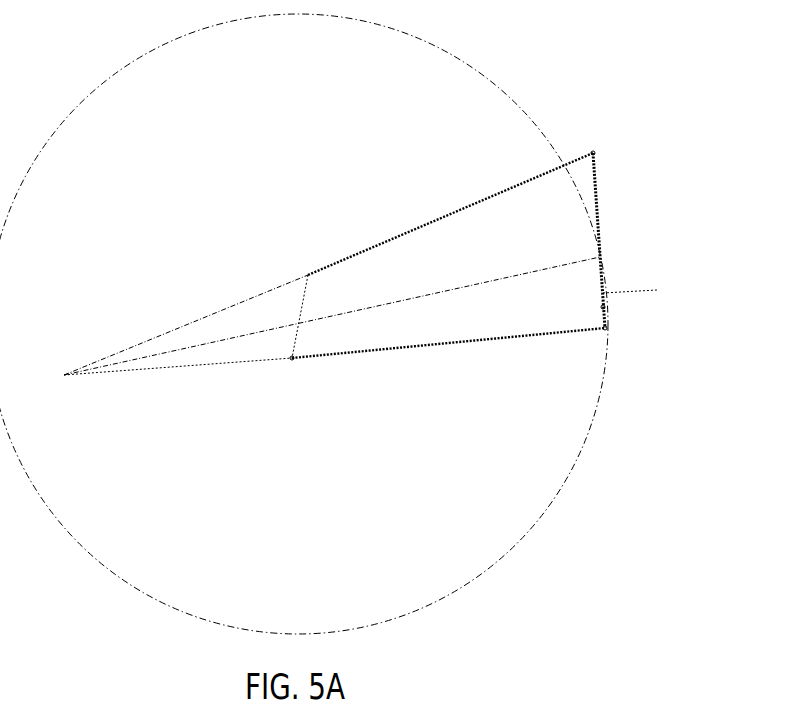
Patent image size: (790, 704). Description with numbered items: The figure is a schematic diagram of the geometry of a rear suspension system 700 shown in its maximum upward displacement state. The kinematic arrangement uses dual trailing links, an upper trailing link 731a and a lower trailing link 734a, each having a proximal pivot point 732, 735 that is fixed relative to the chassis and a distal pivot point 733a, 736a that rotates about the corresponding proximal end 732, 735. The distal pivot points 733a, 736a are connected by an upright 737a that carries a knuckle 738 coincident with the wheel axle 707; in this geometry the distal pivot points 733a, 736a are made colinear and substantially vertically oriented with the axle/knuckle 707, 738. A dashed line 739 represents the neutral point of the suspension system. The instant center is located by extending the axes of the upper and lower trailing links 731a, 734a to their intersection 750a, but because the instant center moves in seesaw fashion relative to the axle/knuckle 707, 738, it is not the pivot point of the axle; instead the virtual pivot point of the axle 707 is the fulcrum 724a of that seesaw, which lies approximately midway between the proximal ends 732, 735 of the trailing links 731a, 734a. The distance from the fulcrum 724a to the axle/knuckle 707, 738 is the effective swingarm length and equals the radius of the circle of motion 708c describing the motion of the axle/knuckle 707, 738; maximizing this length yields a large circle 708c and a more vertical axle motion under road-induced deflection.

The optical system 700 is at (532, 575).
The circle of motion 708c is at (563, 483).
The instant center intersection 750a is at (64, 375).
The virtual pivot point fulcrum 724a is at (298, 325).
The proximal pivot point 732 is at (308, 277).
The proximal pivot point 735 is at (292, 358).
The upper trailing link 731a is at (421, 227).
The lower trailing link 734a is at (421, 347).
The distal pivot point 733a is at (593, 153).
The distal pivot point 736a is at (605, 328).
The upright 737a is at (603, 307).
The wheel axle 707 is at (600, 257).
The knuckle 738 is at (674, 240).
The neutral point dashed line 739 is at (656, 290).